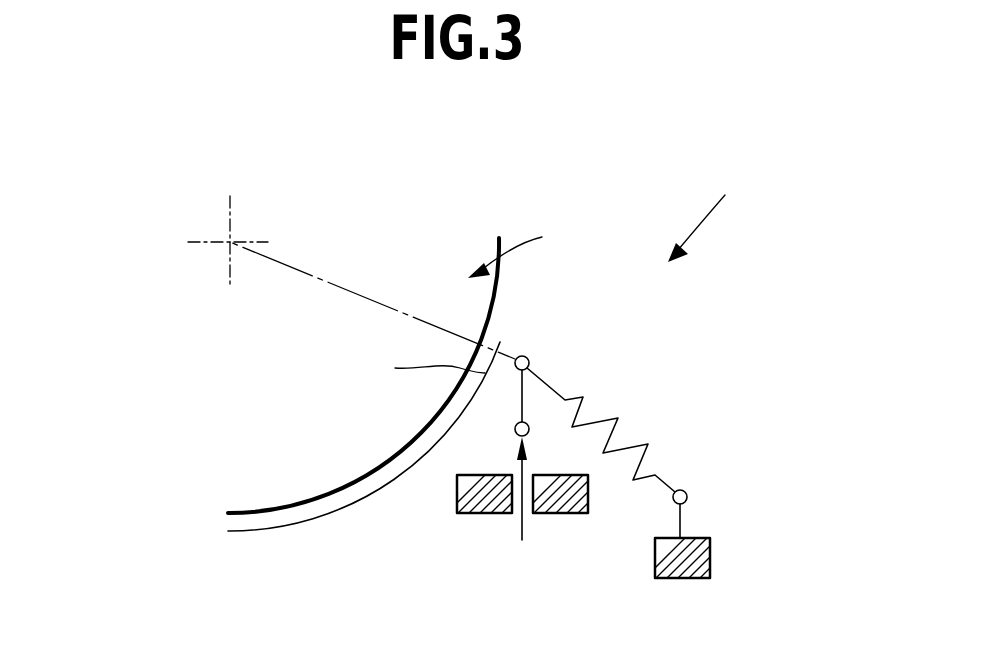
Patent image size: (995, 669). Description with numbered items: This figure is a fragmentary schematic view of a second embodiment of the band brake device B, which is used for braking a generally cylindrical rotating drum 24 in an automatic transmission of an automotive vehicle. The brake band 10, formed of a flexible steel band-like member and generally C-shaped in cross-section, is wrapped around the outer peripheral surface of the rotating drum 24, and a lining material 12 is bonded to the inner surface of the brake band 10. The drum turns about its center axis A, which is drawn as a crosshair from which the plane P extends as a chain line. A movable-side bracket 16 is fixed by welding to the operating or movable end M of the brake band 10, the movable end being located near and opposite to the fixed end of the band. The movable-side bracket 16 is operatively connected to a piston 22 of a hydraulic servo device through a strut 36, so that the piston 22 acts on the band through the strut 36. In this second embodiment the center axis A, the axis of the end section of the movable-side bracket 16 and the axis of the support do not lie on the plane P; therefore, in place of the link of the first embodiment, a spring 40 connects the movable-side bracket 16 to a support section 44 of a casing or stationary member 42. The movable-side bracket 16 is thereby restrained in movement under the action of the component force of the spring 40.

The brake band 10 is at (283, 540).
The lining material 12 is at (333, 493).
The movable-side bracket 16 is at (517, 357).
The piston 22 is at (519, 529).
The rotating drum 24 is at (527, 242).
The strut 36 is at (518, 408).
The spring 40 is at (610, 420).
The stationary member 42 is at (710, 543).
The support section 44 is at (687, 492).
The center axis A is at (229, 243).
The band brake device B is at (709, 211).
The movable end M is at (424, 367).
The plane P is at (313, 273).